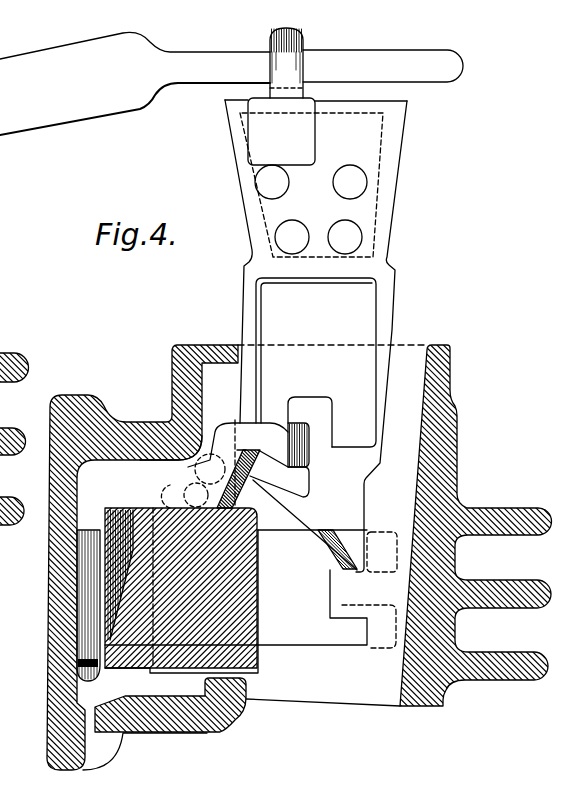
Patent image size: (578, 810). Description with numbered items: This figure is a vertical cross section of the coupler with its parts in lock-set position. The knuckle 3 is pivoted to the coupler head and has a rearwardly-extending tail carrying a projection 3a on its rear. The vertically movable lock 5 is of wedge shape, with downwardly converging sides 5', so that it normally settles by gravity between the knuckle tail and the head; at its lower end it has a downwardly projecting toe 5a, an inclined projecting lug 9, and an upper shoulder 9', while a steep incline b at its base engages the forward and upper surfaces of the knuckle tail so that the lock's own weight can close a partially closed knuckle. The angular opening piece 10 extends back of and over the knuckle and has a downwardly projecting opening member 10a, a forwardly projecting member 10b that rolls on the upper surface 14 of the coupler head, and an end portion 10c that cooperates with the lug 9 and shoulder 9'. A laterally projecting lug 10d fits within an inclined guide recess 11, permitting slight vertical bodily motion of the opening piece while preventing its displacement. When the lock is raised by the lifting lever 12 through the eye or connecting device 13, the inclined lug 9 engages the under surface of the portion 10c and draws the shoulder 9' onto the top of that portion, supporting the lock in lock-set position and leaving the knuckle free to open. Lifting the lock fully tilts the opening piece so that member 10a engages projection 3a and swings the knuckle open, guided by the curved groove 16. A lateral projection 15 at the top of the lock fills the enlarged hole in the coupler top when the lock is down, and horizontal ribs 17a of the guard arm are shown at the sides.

The knuckle 3 is at (233, 612).
The projection on the rear of the knuckle tail 3a is at (116, 656).
The vertically movable lock 5 is at (316, 362).
The downwardly converging sides of the lock 5' is at (391, 336).
The downwardly projecting toe 5a is at (320, 545).
The inclined projecting lug 9 is at (262, 467).
The upper shoulder 9' is at (310, 409).
The steep incline at the base of the lock b is at (277, 524).
The opening piece 10 is at (93, 586).
The downwardly projecting opening member 10a is at (74, 606).
The forwardly projecting member 10b is at (147, 496).
The lock-setting and opening portion 10c is at (238, 463).
The laterally projecting lug 10d is at (188, 474).
The inclined guide recess 11 is at (199, 461).
The lifting lever 12 is at (160, 92).
The eye or connecting device 13 is at (304, 37).
The upper surface of the coupler head 14 is at (147, 461).
The lateral projection 15 is at (281, 131).
The curved groove 16 is at (177, 690).
The horizontal ribs of the guard arm 17a is at (10, 447).